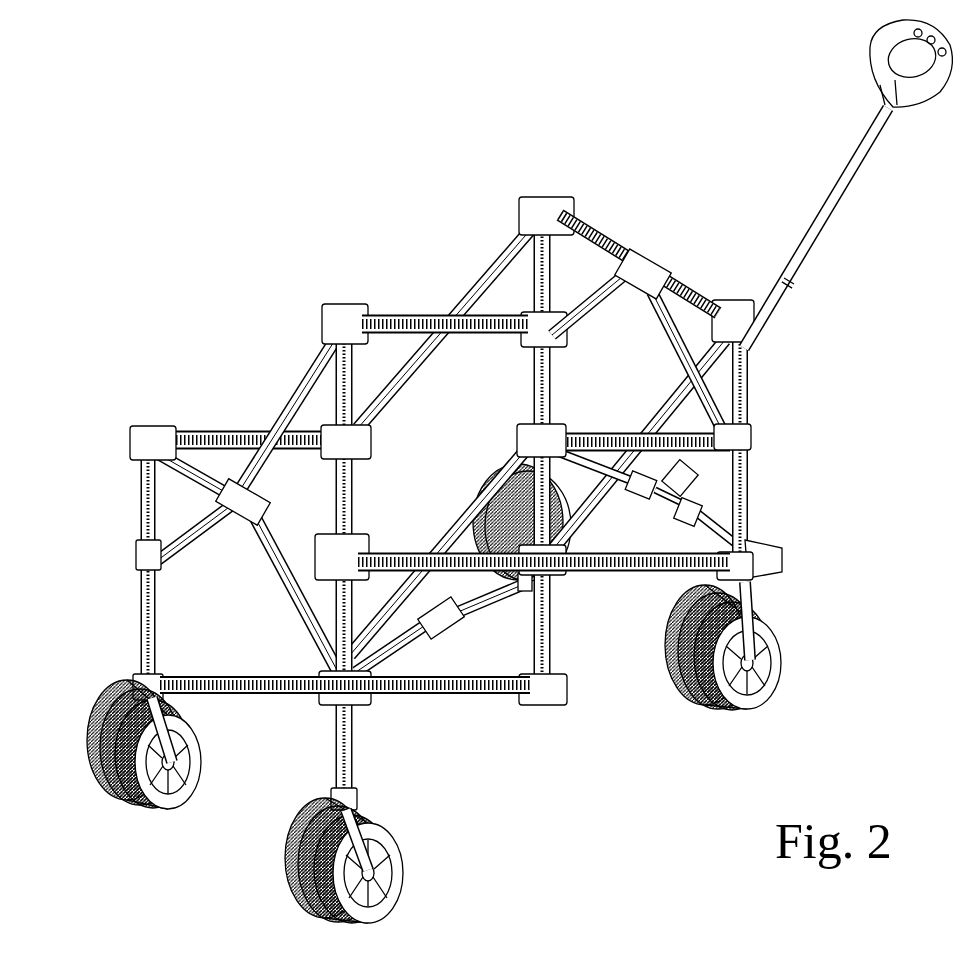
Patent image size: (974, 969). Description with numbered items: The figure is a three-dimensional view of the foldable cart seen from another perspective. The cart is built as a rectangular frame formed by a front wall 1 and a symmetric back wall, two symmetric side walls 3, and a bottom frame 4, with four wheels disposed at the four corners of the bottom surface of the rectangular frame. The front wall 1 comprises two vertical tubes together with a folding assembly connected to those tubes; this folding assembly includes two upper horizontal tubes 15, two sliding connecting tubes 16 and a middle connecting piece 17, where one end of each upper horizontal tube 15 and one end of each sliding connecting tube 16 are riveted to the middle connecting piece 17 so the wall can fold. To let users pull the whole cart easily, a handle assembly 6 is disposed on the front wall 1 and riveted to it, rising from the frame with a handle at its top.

The front wall 1 is at (680, 190).
The side walls 3 is at (381, 308).
The bottom frame 4 is at (481, 688).
The handle assembly 6 is at (797, 274).
The upper horizontal tubes 15 is at (593, 232).
The sliding connecting tubes 16 is at (585, 292).
The middle connecting piece 17 is at (655, 253).